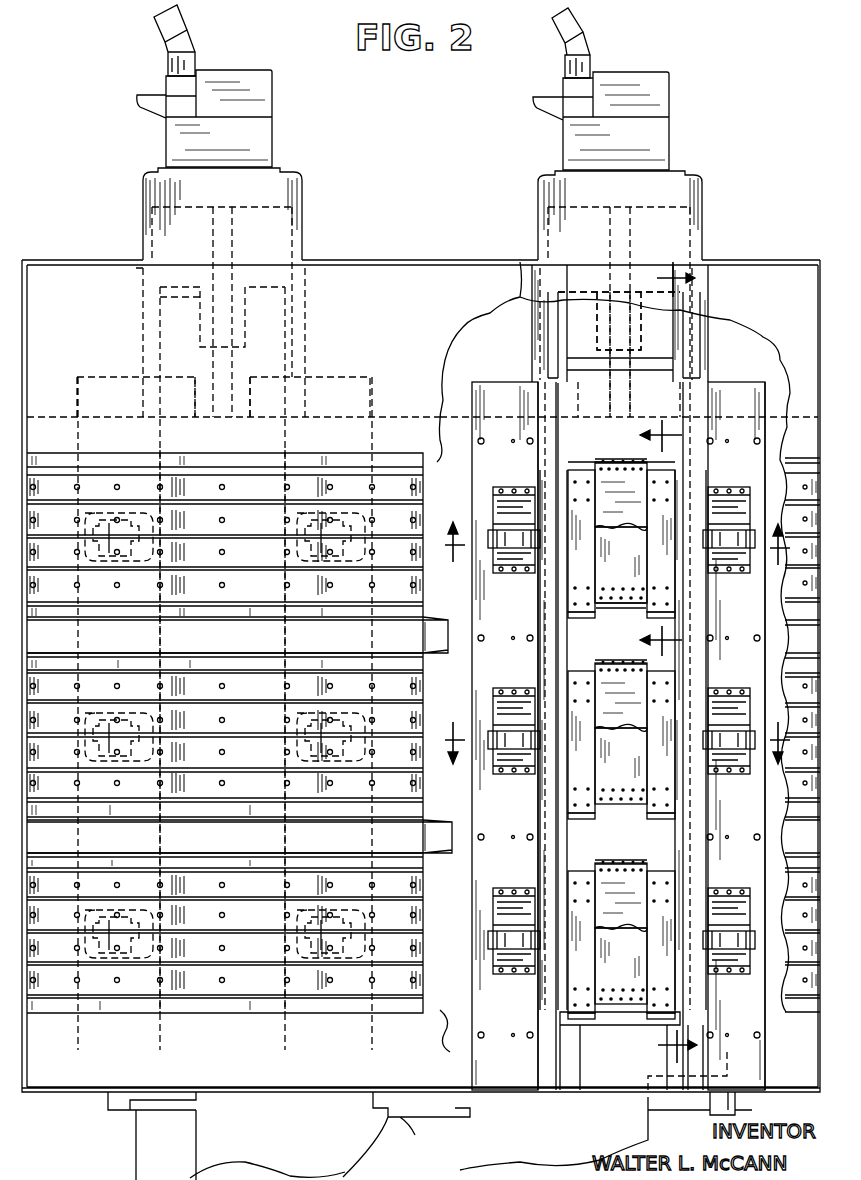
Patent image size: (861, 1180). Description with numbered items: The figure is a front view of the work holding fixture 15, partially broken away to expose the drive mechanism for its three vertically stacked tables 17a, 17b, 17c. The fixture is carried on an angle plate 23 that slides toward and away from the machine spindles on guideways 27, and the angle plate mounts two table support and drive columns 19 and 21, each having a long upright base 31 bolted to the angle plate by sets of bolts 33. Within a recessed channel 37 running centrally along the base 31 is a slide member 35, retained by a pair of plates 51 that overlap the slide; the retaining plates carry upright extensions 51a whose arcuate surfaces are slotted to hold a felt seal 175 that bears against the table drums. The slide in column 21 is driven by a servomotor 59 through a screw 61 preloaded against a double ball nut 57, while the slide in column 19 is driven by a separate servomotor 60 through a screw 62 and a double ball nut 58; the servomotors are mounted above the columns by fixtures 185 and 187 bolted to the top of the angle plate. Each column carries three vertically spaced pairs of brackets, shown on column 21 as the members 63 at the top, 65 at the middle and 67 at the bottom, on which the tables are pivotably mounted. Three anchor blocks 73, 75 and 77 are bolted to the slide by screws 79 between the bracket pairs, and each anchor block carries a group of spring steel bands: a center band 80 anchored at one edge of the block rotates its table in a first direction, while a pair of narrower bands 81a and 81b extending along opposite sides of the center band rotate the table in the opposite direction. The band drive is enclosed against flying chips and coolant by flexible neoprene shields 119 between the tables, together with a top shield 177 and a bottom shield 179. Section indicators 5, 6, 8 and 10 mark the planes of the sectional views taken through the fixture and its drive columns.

The work holding fixture 15 is at (72, 256).
The servomotor 60 is at (190, 14).
The servomotor 59 is at (585, 20).
The screw 62 is at (236, 238).
The screw 61 is at (636, 225).
The servomotor mounting fixture 185 is at (304, 190).
The servomotor mounting fixture 187 is at (704, 198).
The upright base 31 is at (90, 377).
The double ball nut 58 is at (244, 318).
The table support and drive column 19 is at (316, 362).
The top shield 177 is at (437, 452).
The work table 17a is at (278, 530).
The work table 17b is at (278, 730).
The work table 17c is at (218, 957).
The flexible shield 119 is at (432, 600).
The bottom shield 179 is at (444, 1016).
The angle plate 23 is at (446, 368).
The table support and drive column 21 is at (726, 344).
The slide member 35 is at (548, 320).
The double ball nut 57 is at (600, 316).
The channel 37 is at (558, 403).
The section line 5- 5 is at (667, 662).
The retaining plate 51 is at (540, 456).
The bolts 33 is at (528, 437).
The upright wall extension 51a is at (560, 498).
The felt seal 175 is at (684, 520).
The anchor block 73 is at (566, 472).
The anchor block 75 is at (575, 668).
The anchor block 77 is at (575, 868).
The narrower drive band 81a is at (573, 530).
The narrower drive band 81b is at (668, 533).
The center drive band 80 is at (628, 470).
The screws 79 is at (632, 604).
The section line 6- 6 is at (654, 538).
The pair of brackets 63 is at (507, 576).
The pair of brackets 65 is at (512, 774).
The pair of brackets 67 is at (515, 956).
The section line 8- 8 is at (617, 554).
The section line 10- 10 is at (615, 730).
The guideways 27 is at (118, 1114).